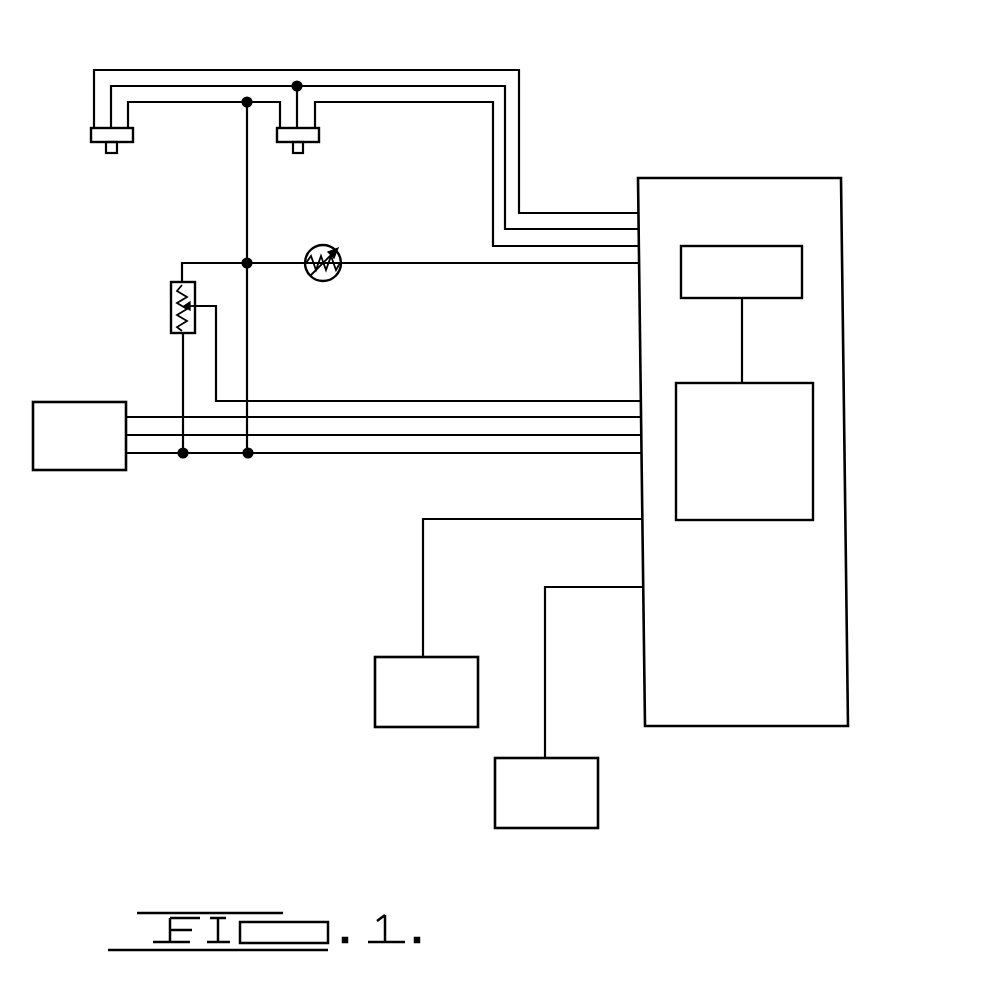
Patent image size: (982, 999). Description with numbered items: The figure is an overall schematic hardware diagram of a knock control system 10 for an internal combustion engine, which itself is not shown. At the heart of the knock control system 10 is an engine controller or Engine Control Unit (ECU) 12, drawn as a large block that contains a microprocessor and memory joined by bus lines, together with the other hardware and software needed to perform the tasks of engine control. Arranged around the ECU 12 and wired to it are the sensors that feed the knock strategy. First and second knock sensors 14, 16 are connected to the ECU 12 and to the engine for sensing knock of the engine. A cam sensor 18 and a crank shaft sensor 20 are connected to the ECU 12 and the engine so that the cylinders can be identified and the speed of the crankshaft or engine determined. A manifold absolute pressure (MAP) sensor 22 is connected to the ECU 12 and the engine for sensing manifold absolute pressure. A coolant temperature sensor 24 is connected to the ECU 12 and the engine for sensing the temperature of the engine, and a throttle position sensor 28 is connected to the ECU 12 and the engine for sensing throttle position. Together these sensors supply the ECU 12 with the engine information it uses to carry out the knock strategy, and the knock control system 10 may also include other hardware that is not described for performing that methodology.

The knock control system 10 is at (775, 100).
The Engine Control Unit 12 is at (795, 712).
The first knock sensor 14 is at (553, 828).
The second knock sensor 16 is at (383, 727).
The cam sensor 18 is at (97, 137).
The crank shaft sensor 20 is at (284, 137).
The manifold absolute pressure (MAP) sensor 22 is at (75, 470).
The coolant temperature sensor 24 is at (335, 249).
The throttle position sensor 28 is at (172, 284).